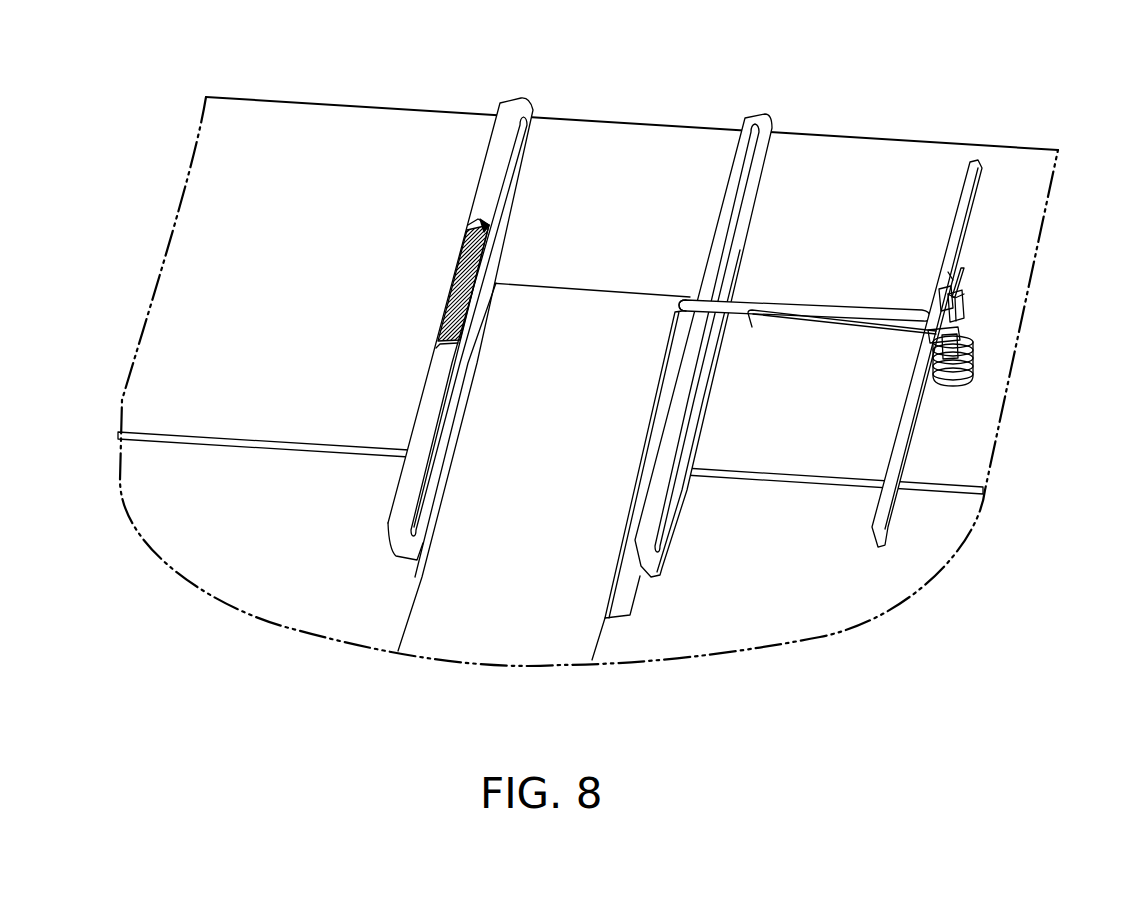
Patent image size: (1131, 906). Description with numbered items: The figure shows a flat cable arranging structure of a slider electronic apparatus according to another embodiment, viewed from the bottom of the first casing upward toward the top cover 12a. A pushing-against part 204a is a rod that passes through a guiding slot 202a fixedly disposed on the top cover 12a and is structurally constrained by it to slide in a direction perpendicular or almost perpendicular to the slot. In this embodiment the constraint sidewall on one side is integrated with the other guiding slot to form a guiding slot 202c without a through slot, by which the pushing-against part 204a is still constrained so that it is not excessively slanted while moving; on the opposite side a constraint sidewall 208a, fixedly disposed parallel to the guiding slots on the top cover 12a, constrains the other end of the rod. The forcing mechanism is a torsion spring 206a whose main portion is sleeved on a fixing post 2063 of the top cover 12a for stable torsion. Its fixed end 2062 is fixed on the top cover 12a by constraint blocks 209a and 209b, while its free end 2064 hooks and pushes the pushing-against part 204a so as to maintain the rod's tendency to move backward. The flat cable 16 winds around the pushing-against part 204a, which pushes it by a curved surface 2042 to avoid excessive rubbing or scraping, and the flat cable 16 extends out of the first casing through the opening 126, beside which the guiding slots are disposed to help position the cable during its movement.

The top cover 12a is at (330, 123).
The flat cable 16 is at (483, 640).
The opening 126 is at (412, 572).
The guiding slot 202a is at (750, 130).
The guiding slot without through slot 202c is at (488, 240).
The curved surface 2042 is at (684, 292).
The pushing-against part 204a is at (795, 310).
The free end 2064 is at (773, 313).
The torsion spring 206a is at (1000, 380).
The fixed end 2062 is at (962, 278).
The fixing post 2063 is at (930, 334).
The constraint sidewall 208a is at (970, 200).
The constraint block 209a is at (938, 273).
The constraint block 209b is at (940, 318).